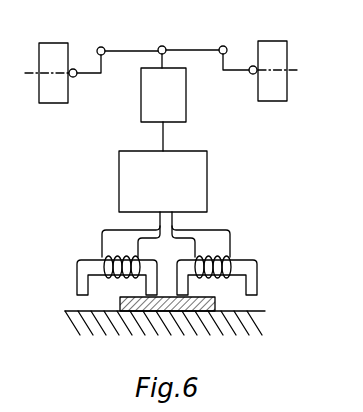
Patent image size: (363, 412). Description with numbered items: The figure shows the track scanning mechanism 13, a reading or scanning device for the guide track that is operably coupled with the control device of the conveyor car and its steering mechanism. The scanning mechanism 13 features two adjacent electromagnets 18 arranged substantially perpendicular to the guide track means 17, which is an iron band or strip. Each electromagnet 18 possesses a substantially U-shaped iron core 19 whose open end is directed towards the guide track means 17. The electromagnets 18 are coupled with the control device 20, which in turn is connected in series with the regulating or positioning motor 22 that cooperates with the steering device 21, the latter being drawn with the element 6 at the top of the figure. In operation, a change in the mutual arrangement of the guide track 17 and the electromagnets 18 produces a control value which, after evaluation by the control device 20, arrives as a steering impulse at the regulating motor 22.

The rotatable element / switch unit 6 is at (280, 57).
The track scanning mechanism 13 is at (143, 256).
The guide track means 17 is at (158, 312).
The electromagnets 18 is at (77, 287).
The U-shaped iron core 19 is at (90, 265).
The control device 20 is at (208, 175).
The steering device 21 is at (199, 50).
The regulating motor 22 is at (186, 108).